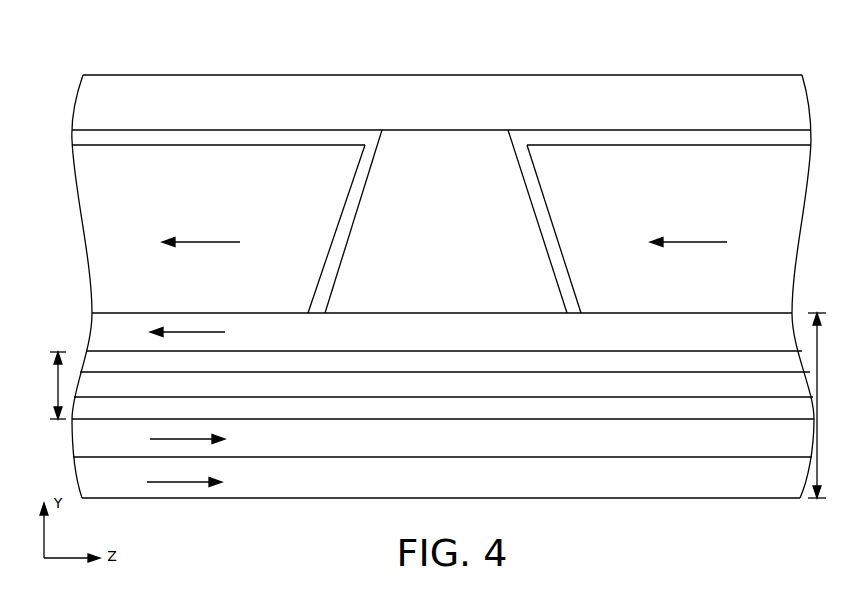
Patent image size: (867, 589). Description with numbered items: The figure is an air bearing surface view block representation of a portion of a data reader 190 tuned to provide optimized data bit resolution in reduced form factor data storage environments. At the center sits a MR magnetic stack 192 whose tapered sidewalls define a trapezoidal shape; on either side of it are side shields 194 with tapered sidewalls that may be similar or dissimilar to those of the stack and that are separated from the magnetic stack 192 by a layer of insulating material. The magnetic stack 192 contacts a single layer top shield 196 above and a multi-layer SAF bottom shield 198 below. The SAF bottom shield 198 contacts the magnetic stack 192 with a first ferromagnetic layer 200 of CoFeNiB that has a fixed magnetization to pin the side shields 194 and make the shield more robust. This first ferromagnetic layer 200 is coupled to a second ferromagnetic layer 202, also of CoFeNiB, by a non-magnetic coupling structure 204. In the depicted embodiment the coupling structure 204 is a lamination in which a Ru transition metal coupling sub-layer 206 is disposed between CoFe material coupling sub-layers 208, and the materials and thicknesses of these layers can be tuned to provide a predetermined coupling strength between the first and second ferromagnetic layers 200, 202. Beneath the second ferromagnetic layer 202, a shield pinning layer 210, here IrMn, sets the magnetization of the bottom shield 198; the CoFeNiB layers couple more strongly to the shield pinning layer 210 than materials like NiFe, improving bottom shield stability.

The data reader 190 is at (746, 52).
The MR magnetic stack 192 is at (428, 306).
The side shield 194 is at (186, 308).
The top shield 196 is at (761, 112).
The SAF bottom shield 198 is at (827, 405).
The first ferromagnetic layer 200 is at (759, 341).
The second ferromagnetic layer 202 is at (759, 446).
The non-magnetic coupling structure 204 is at (46, 385).
The Ru transition metal coupling sub-layer 206 is at (759, 392).
The CoFe material coupling sub-layer 208 is at (759, 369).
The shield pinning layer 210 is at (759, 485).